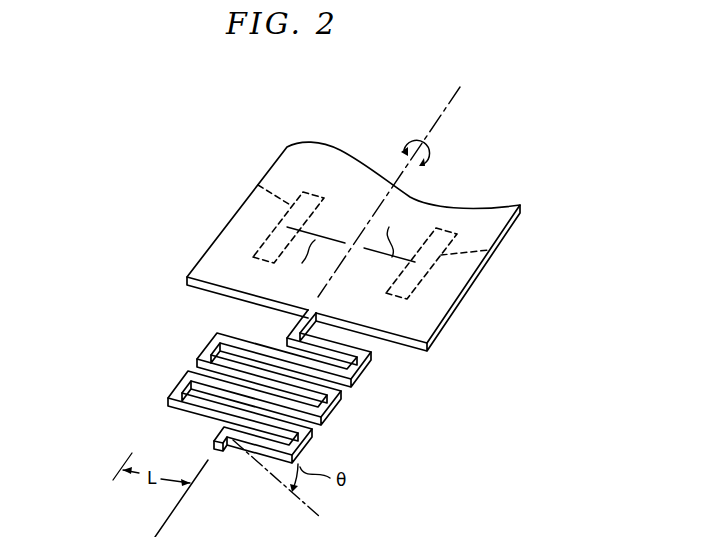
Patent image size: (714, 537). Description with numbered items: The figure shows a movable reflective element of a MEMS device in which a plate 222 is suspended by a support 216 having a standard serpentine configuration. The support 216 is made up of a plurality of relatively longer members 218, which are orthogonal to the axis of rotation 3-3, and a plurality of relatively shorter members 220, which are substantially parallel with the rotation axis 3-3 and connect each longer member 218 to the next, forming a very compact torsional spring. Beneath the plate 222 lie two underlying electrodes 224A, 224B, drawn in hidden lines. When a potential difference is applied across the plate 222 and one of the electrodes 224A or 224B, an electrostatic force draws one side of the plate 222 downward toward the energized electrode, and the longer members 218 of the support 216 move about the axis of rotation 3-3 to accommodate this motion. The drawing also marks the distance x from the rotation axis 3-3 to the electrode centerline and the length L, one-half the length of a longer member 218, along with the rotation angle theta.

The support 216 is at (116, 311).
The longer members 218 is at (226, 331).
The shorter members 220 is at (362, 370).
The plate 222 is at (222, 248).
The electrode 224A is at (490, 253).
The electrode 224B is at (258, 190).
The axis of rotation 3 is at (440, 119).